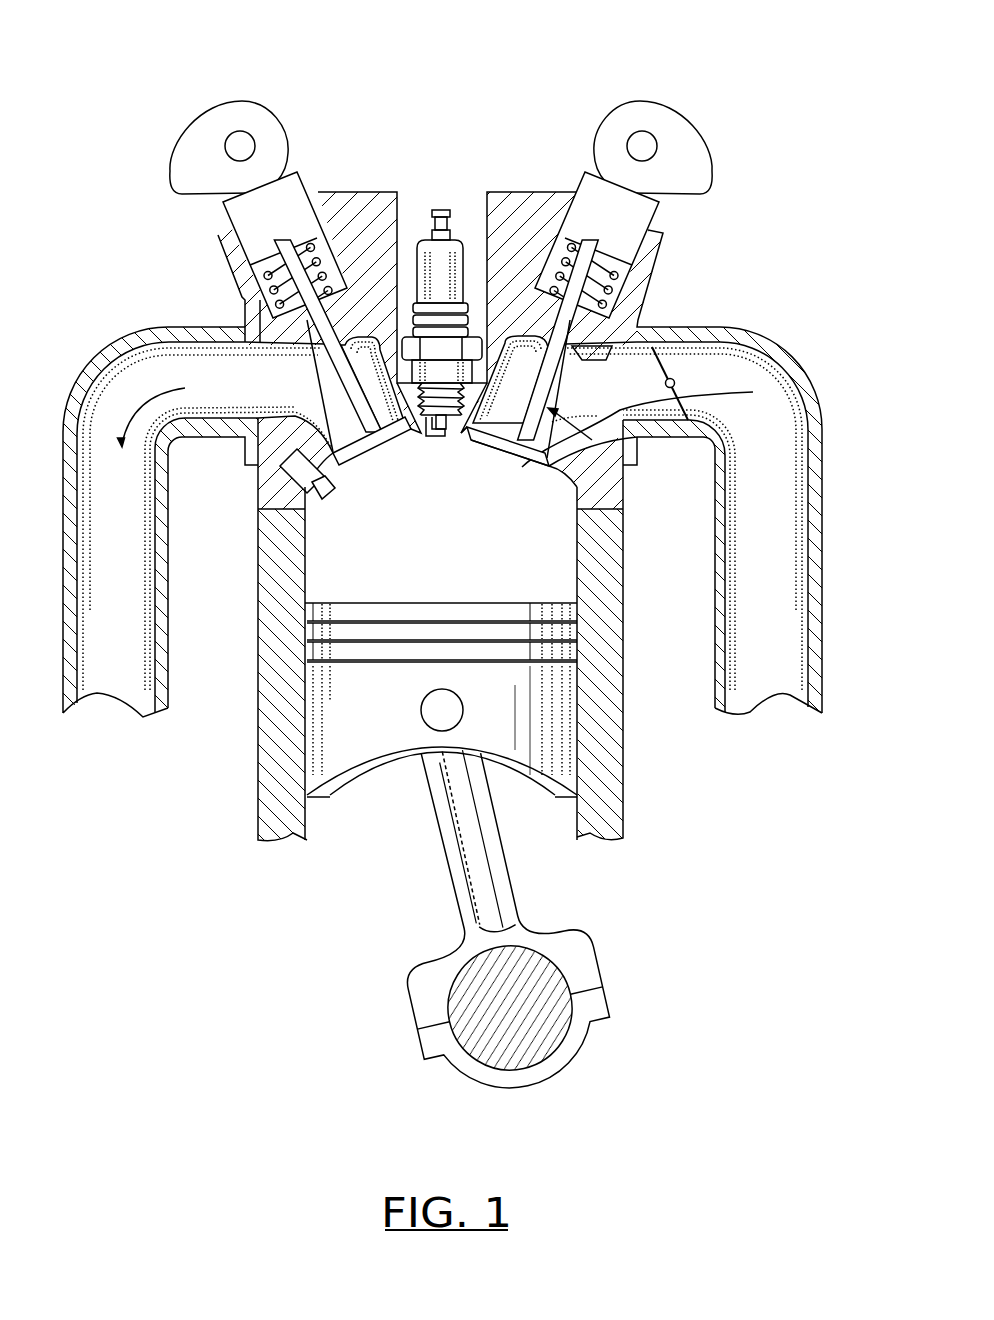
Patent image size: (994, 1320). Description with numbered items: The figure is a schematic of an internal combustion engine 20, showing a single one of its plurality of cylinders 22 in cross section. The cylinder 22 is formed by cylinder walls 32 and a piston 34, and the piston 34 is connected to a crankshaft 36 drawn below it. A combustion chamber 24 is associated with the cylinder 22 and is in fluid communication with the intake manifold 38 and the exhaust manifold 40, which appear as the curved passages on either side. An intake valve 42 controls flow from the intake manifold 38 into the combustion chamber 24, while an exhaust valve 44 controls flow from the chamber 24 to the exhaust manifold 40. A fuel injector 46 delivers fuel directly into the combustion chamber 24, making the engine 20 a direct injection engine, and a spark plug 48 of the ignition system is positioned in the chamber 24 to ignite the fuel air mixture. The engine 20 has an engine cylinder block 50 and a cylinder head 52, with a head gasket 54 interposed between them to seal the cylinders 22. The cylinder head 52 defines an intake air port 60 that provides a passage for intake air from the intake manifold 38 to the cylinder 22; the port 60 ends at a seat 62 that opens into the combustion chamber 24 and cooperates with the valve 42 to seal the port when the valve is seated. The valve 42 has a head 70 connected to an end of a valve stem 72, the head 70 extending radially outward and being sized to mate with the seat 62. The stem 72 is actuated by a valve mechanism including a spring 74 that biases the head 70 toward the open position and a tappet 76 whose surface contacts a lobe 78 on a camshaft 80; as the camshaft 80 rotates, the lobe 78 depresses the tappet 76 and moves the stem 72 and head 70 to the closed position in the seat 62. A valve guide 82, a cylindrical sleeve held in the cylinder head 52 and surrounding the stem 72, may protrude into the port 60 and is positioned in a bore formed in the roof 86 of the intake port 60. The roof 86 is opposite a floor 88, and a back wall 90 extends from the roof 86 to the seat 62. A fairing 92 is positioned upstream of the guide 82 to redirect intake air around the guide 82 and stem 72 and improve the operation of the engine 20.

The internal combustion engine 20 is at (791, 94).
The cylinder 22 is at (400, 534).
The combustion chamber 24 is at (498, 557).
The cylinder walls 32 is at (625, 655).
The piston 34 is at (500, 727).
The crankshaft 36 is at (455, 984).
The intake manifold 38 is at (722, 230).
The exhaust manifold 40 is at (115, 318).
The intake valve 42 is at (840, 456).
The exhaust valve 44 is at (198, 253).
The fuel injector 46 is at (300, 472).
The spark plug 48 is at (453, 242).
The engine cylinder block 50 is at (625, 722).
The cylinder head 52 is at (625, 478).
The head gasket 54 is at (625, 510).
The intake air port 60 is at (753, 392).
The seat 62 is at (637, 462).
The head 70 is at (513, 453).
The valve stem 72 is at (549, 466).
The spring 74 is at (608, 273).
The tappet 76 is at (593, 207).
The lobe 78 is at (620, 100).
The camshaft 80 is at (653, 143).
The valve guide 82 is at (543, 317).
The roof 86 is at (677, 367).
The floor 88 is at (580, 426).
The back wall 90 is at (513, 430).
The fairing 92 is at (620, 320).